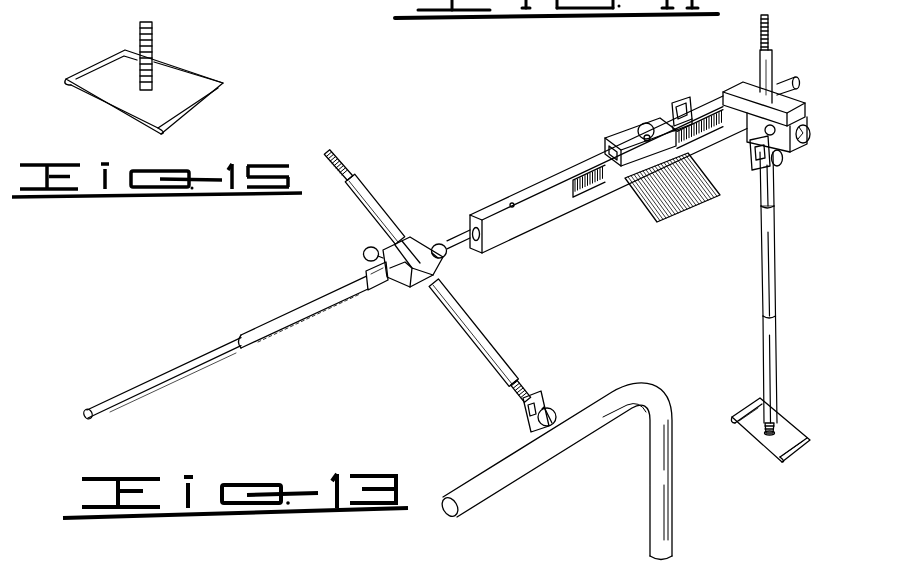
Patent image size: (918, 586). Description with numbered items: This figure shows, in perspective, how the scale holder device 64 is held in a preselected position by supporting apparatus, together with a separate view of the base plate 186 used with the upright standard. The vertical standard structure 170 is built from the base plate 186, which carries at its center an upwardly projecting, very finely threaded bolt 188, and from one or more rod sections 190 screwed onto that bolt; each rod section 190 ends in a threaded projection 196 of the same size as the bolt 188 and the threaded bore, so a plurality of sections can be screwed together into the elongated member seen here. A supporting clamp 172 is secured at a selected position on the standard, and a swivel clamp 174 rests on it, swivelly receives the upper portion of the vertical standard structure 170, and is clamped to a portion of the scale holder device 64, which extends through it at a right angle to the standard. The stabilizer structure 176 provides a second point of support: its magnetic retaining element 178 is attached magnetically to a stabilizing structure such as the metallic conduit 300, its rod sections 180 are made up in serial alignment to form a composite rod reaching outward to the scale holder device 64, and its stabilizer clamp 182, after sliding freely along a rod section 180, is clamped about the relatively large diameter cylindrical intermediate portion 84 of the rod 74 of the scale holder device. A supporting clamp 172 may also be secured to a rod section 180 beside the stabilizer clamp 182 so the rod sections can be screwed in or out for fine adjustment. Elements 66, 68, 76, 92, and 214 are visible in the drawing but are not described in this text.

In FIG. 13, the scale holder device 64 is at (534, 186).
In FIG. 13, the slider block 66 is at (626, 122).
In FIG. 13, the bracket 68 is at (677, 88).
In FIG. 13, the rod 74 is at (265, 356).
In FIG. 13, the rod tip 76 is at (90, 424).
In FIG. 13, the cylindrical intermediate portion 84 is at (293, 327).
In FIG. 13, the scale slot 92 is at (543, 215).
In FIG. 13, the vertical standard structure 170 is at (755, 265).
In FIG. 13, the supporting clamp 172 is at (450, 270).
In FIG. 13, the swivel clamp 174 is at (814, 104).
In FIG. 13, the stabilizer structure 176 is at (482, 323).
In FIG. 13, the magnetic retaining element 178 is at (565, 395).
In FIG. 13, the rod sections 180 is at (373, 202).
In FIG. 13, the stabilizer clamp 182 is at (394, 304).
In FIG. 15, the base plate 186 is at (177, 87).
In FIG. 13, the base plate 186 is at (773, 458).
In FIG. 15, the threaded bolt 188 is at (150, 50).
In FIG. 13, the threaded bolt 188 is at (760, 438).
In FIG. 13, the rod section 190 is at (776, 184).
In FIG. 13, the threaded projection 196 is at (769, 23).
In FIG. 13, the knob 214 is at (809, 134).
In FIG. 13, the metallic conduit 300 is at (543, 457).